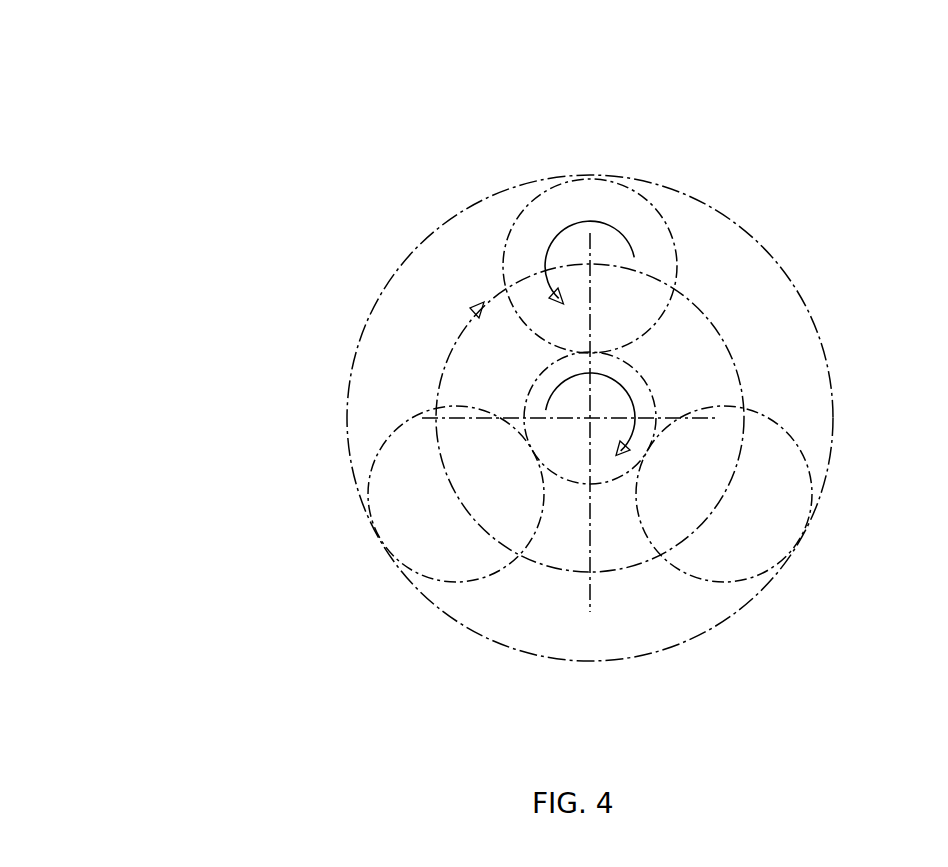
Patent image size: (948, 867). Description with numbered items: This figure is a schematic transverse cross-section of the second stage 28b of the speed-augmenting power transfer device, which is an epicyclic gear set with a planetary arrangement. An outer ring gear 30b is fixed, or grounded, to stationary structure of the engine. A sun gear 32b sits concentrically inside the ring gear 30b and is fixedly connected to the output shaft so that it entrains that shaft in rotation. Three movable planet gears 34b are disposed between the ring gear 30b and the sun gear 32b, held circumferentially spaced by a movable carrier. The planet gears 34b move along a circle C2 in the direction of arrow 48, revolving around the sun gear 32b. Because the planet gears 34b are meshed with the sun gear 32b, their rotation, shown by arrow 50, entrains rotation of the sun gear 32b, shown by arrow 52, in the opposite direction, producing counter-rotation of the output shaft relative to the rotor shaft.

The second stage 28b is at (280, 163).
The ring gear 30b is at (451, 210).
The sun gear 32b is at (642, 361).
The planet gears 34b is at (518, 212).
The arrow 48 is at (458, 340).
The arrow 50 is at (613, 227).
The arrow 52 is at (632, 412).
The circle C2 is at (712, 524).